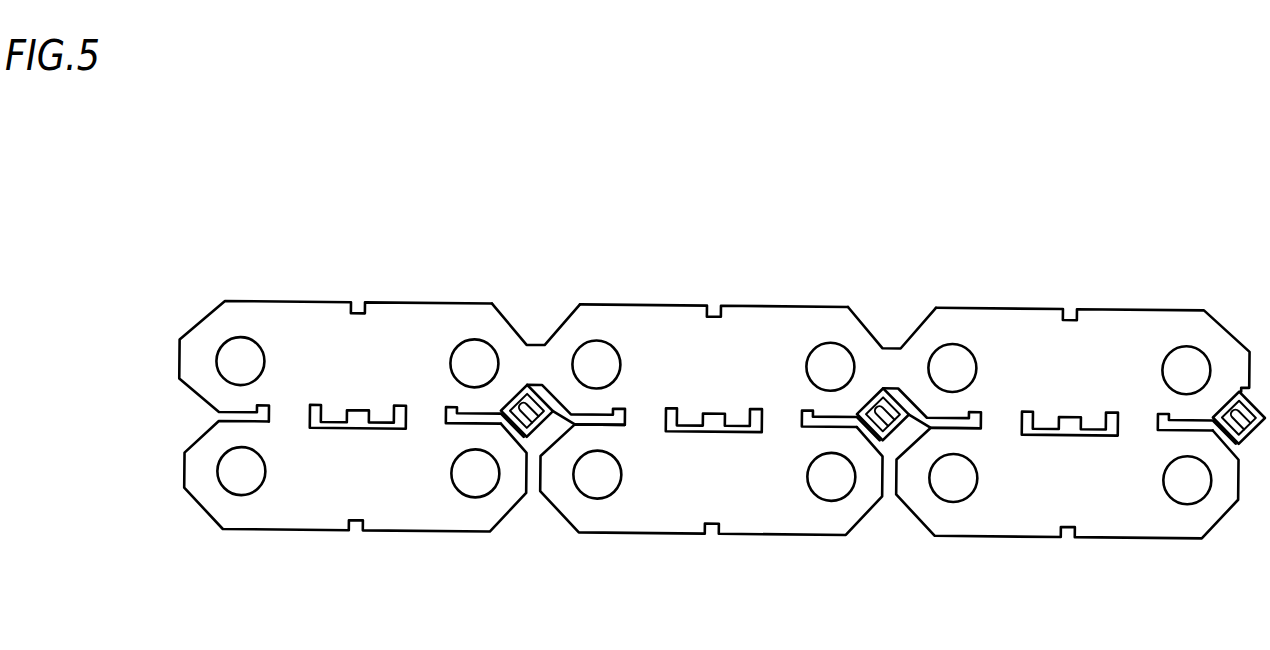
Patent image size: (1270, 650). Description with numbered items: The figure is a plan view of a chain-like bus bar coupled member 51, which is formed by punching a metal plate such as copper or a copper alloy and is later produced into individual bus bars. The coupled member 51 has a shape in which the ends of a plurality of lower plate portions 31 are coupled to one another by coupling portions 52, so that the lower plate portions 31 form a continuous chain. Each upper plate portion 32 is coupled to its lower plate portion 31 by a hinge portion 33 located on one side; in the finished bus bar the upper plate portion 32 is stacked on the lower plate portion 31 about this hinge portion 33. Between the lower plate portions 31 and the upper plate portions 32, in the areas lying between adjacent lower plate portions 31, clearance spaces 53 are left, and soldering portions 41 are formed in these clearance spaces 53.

The bus bar coupled member 51 is at (995, 249).
The lower plate portion 31 is at (285, 307).
The upper plate portion 32 is at (271, 516).
The hinge portion 33 is at (288, 413).
The soldering portion 41 is at (511, 431).
The coupling portion 52 is at (537, 355).
The clearance space 53 is at (546, 433).